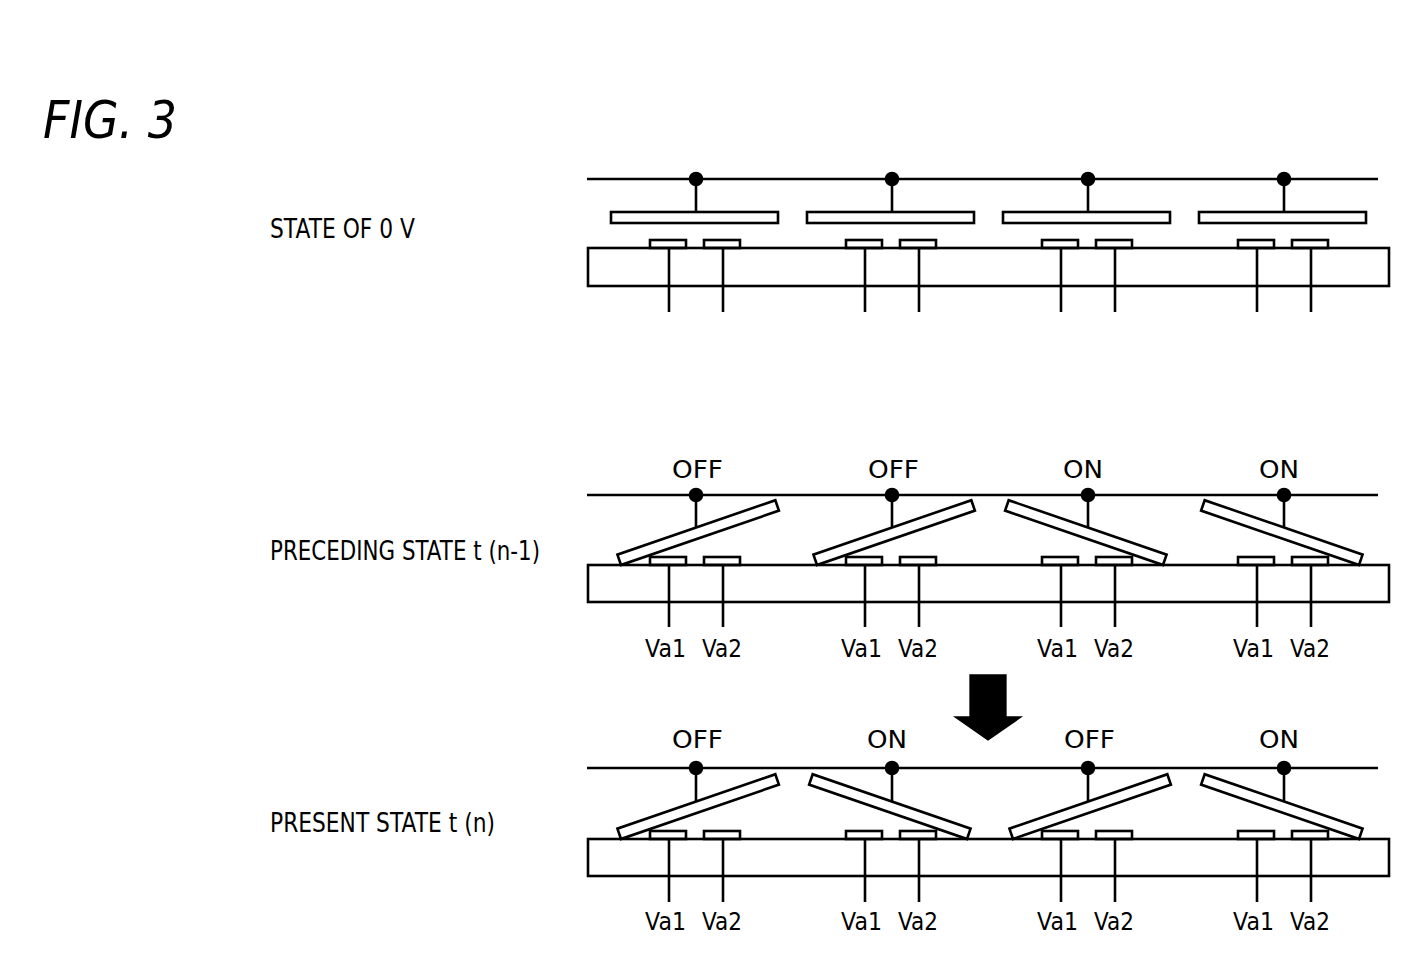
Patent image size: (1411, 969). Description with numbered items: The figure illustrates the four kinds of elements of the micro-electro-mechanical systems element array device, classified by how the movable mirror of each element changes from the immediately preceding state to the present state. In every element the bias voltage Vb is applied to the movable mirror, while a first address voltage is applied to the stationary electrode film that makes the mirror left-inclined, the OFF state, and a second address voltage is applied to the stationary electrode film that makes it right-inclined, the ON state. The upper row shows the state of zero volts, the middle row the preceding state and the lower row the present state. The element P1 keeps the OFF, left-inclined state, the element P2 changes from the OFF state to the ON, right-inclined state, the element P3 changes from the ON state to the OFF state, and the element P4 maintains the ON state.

The element P1 is at (694, 239).
The element P2 is at (890, 239).
The element P3 is at (1086, 239).
The element P4 is at (1282, 239).
The bias voltage Vb is at (962, 466).